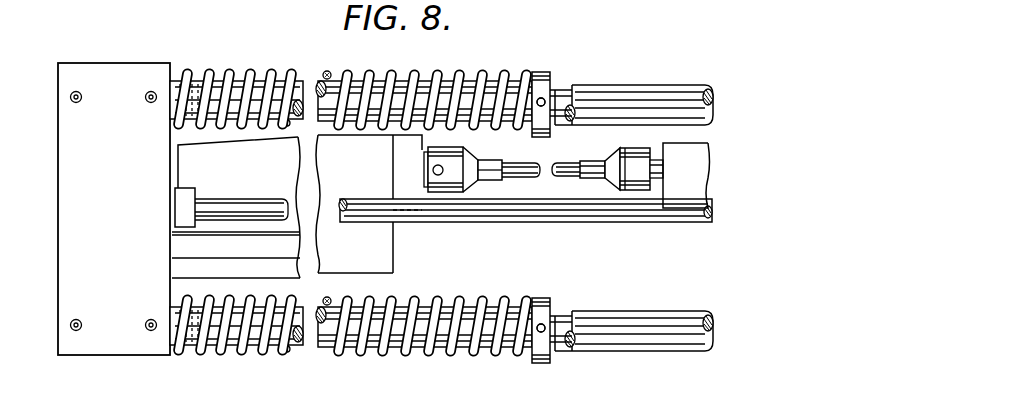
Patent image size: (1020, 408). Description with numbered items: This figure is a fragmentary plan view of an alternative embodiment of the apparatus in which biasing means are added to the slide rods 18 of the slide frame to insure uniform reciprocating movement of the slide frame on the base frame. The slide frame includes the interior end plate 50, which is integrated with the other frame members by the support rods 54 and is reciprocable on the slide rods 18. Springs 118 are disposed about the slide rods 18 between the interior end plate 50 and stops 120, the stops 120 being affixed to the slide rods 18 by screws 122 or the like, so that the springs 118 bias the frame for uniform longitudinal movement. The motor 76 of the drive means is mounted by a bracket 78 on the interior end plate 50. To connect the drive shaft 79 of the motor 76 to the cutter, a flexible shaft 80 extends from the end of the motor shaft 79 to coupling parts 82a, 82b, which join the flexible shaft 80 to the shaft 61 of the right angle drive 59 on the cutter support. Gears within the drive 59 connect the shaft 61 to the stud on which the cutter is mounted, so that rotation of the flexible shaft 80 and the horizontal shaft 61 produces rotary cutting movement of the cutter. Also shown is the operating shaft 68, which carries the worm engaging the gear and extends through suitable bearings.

The interior end plate 50 is at (107, 76).
The support rods 54 is at (193, 87).
The slide rods 18 is at (318, 79).
The springs 118 is at (440, 74).
The stops 120 is at (548, 73).
The screws 122 is at (548, 97).
The bracket 78 is at (212, 262).
The motor 76 is at (388, 258).
The operating shaft 68 is at (563, 227).
The drive shaft 79 is at (426, 191).
The coupling 82a is at (480, 165).
The flexible shaft 80 is at (507, 178).
The coupling 82b is at (598, 185).
The shaft 61 is at (656, 178).
The right angle drive 59 is at (698, 163).